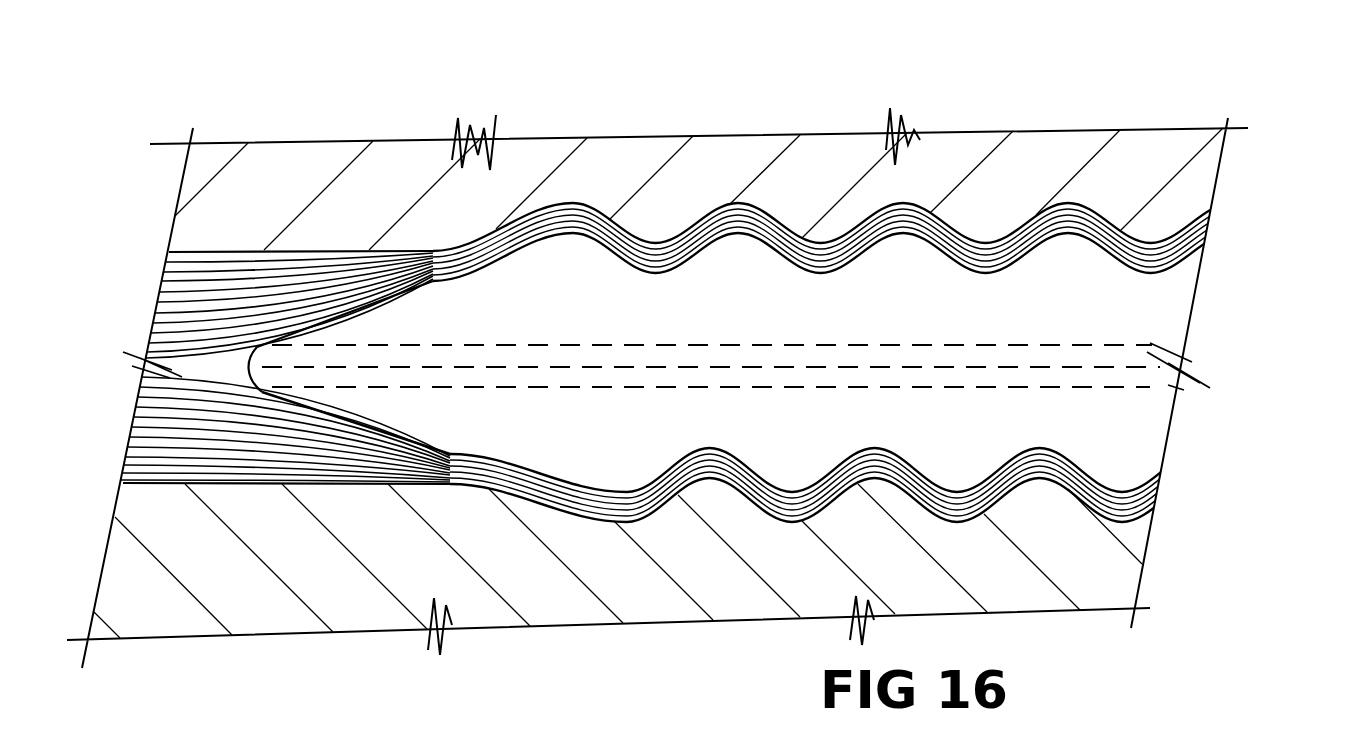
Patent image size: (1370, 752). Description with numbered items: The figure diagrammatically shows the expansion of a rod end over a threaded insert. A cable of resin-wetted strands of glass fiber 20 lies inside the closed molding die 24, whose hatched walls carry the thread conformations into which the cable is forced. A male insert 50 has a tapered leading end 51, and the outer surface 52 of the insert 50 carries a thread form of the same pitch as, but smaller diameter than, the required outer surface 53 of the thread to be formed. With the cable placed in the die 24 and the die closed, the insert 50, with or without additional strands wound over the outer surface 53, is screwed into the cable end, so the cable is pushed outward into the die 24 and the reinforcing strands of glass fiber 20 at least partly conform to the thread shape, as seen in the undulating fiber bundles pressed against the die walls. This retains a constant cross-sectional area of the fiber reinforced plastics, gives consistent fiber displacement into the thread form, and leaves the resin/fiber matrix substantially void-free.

The strands of glass fiber 20 is at (1155, 477).
The molding die 24 is at (1078, 558).
The male insert 50 is at (1236, 296).
The tapered leading end 51 is at (365, 378).
The outer surface of the insert 52 is at (1140, 273).
The outer surface of the thread 53 is at (1066, 200).